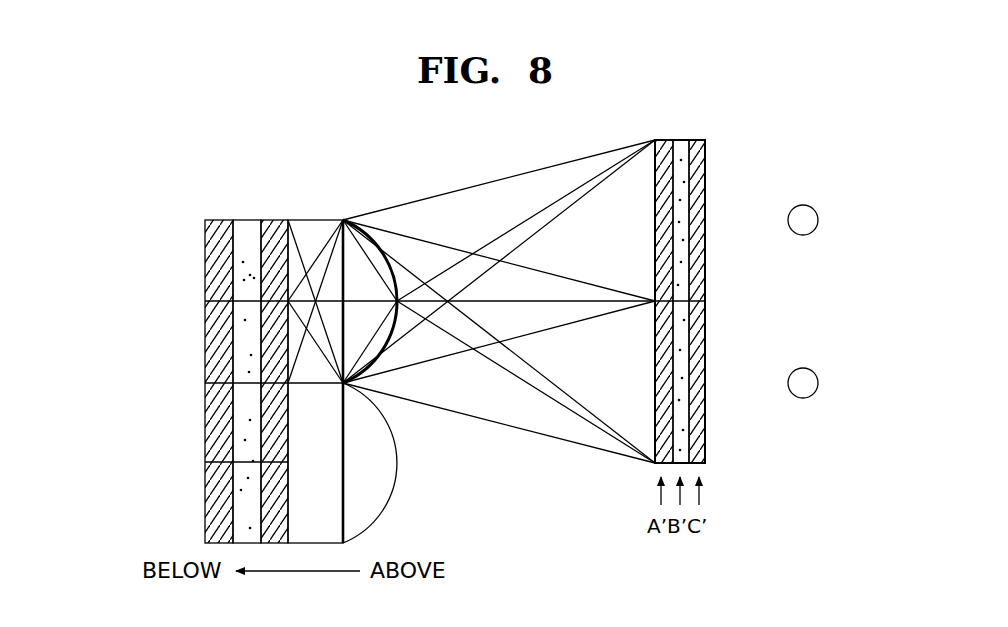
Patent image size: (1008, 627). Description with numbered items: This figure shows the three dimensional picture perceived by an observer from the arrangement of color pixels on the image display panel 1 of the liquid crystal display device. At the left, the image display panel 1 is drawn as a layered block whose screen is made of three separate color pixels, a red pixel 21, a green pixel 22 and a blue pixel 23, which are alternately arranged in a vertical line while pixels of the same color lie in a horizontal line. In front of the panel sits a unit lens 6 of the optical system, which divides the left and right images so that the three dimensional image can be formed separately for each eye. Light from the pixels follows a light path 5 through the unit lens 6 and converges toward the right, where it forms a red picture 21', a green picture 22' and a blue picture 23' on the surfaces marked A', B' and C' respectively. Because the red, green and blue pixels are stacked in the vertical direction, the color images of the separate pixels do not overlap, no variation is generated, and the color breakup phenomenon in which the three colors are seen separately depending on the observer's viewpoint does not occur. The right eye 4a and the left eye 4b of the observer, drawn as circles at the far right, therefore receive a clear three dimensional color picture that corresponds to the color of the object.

The image display panel 1 is at (223, 342).
The light path 5 is at (483, 184).
The unit lens of an optical system 6 is at (380, 470).
The red pixel 21 is at (145, 381).
The green pixel 22 is at (155, 381).
The blue pixel 23 is at (171, 381).
The red picture 21' is at (783, 301).
The green picture 22' is at (754, 301).
The blue picture 23' is at (728, 301).
The right eye of an observer 4a is at (818, 220).
The left eye of an observer 4b is at (818, 383).